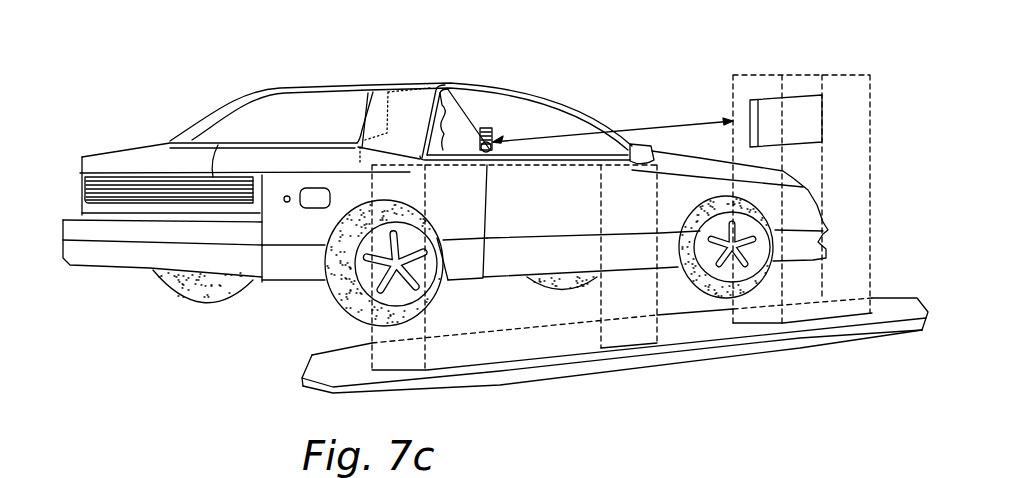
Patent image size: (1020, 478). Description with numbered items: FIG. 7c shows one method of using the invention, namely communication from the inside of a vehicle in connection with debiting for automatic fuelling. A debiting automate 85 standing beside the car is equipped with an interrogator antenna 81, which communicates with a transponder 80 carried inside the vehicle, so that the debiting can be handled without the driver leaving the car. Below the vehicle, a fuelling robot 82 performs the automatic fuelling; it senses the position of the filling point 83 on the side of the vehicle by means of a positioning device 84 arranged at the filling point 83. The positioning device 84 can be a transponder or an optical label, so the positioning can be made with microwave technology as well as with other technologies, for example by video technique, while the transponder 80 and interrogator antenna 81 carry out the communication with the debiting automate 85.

The transponder 80 is at (490, 134).
The interrogator antenna 81 is at (793, 128).
The fuelling robot 82 is at (503, 310).
The filling point 83 is at (308, 193).
The positioning device 84 is at (284, 198).
The debiting automate 85 is at (805, 287).